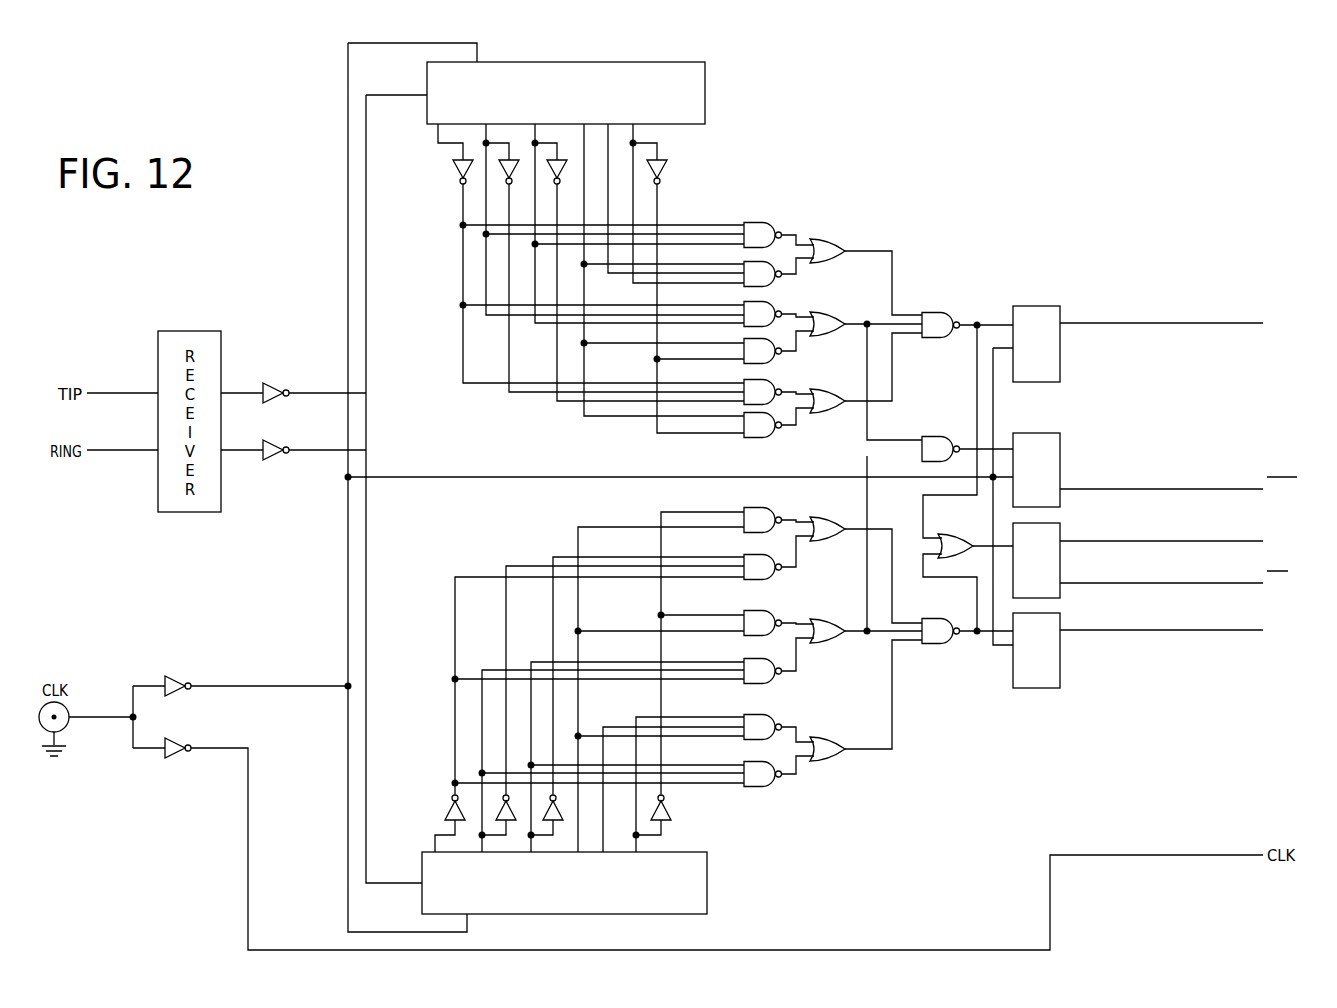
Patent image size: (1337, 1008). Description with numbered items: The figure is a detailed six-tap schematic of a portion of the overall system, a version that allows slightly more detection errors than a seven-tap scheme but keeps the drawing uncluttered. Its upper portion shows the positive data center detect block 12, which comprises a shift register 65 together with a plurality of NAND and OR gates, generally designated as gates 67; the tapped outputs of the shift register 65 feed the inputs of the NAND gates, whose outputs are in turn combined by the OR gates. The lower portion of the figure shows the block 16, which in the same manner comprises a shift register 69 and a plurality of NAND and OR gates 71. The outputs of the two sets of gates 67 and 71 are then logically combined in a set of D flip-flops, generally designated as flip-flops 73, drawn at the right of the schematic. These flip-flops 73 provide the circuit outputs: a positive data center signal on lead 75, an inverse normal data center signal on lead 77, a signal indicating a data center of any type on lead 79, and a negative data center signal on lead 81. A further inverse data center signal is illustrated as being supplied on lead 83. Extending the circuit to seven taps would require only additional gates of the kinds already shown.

The positive data center detect block 12 is at (425, 283).
The block 16 is at (420, 697).
The shift register 65 is at (707, 90).
The NAND and OR gates 67 is at (820, 193).
The shift register 69 is at (708, 882).
The NAND and OR gates 71 is at (817, 786).
The D flip-flops 73 is at (1033, 714).
The lead 75 is at (1153, 323).
The lead 77 is at (1162, 489).
The lead 79 is at (1163, 541).
The lead 81 is at (1165, 630).
The lead 83 is at (1165, 583).